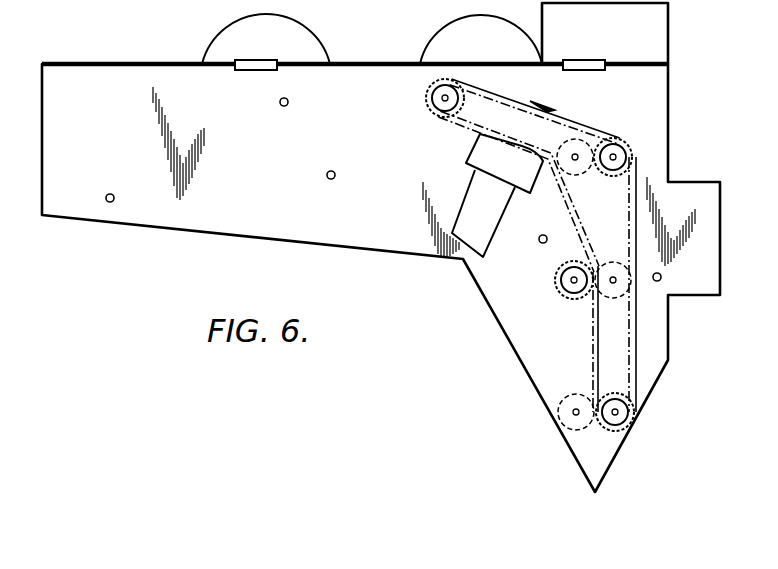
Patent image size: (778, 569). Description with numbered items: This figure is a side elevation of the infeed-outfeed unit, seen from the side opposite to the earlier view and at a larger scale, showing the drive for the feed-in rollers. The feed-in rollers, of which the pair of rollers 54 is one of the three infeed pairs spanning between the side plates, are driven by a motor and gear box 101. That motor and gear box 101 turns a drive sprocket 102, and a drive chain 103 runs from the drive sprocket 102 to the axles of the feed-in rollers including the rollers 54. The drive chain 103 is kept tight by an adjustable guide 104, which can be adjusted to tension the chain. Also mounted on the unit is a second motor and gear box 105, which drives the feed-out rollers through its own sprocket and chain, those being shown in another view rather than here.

The motor and gear box 105 is at (221, 36).
The motor and gear box 101 is at (431, 43).
The drive sprocket 102 is at (456, 88).
The drive chain 103 is at (589, 132).
The adjustable guide 104 is at (470, 163).
The pair of rollers 54 is at (568, 396).